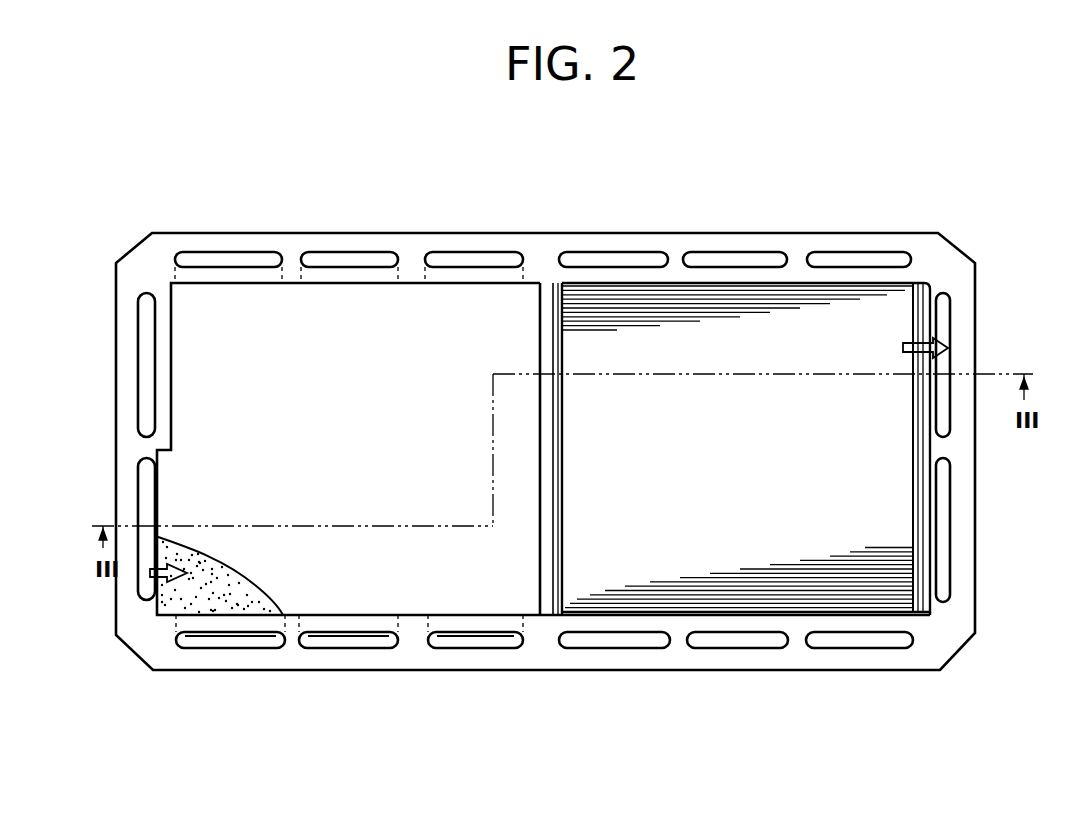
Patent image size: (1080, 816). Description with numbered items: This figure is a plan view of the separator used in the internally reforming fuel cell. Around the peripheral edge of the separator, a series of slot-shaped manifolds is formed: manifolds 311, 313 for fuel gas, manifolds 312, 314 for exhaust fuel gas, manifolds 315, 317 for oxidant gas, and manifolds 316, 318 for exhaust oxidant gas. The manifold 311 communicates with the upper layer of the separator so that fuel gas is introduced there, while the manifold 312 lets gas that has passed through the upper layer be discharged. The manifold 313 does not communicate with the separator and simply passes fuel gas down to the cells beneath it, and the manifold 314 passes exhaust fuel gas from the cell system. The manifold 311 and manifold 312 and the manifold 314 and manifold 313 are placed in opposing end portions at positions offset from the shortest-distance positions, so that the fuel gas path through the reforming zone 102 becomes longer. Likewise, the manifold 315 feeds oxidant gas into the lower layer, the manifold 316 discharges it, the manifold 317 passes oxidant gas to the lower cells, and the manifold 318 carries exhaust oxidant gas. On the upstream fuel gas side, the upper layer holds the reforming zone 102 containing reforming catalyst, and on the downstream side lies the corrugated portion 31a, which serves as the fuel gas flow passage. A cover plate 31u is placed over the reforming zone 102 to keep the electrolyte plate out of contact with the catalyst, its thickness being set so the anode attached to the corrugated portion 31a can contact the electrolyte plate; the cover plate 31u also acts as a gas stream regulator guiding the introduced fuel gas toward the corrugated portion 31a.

The reforming zone 102 is at (177, 607).
The manifold for fuel gas 311 is at (148, 560).
The manifold for exhaust fuel gas 312 is at (945, 328).
The manifold for fuel gas 313 is at (945, 548).
The manifold for exhaust fuel gas 314 is at (147, 387).
The manifold for oxidant gas 315 is at (443, 258).
The manifold for exhaust oxidant gas 316 is at (263, 647).
The manifold for oxidant gas 317 is at (842, 647).
The manifold for exhaust oxidant gas 318 is at (828, 258).
The cover plate 31u is at (515, 573).
The corrugated portion 31a is at (870, 565).